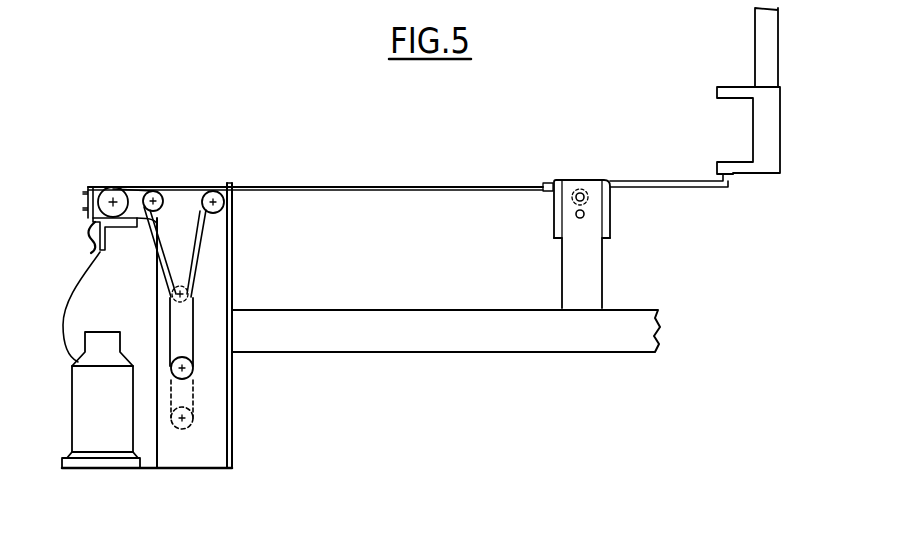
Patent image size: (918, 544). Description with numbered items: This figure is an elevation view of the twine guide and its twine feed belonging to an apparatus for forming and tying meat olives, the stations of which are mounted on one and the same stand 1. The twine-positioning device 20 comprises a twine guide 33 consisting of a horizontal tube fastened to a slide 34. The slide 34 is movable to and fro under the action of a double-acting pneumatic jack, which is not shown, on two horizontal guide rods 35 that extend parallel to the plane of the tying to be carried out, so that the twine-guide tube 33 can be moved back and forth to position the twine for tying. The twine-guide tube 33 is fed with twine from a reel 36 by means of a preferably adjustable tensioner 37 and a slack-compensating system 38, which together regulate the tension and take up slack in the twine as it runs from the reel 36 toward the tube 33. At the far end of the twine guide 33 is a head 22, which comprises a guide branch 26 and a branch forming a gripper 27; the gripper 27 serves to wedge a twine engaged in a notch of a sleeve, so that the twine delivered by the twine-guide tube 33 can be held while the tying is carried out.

The stand 1 is at (431, 358).
The twine-positioning device 20 is at (628, 168).
The head 22 is at (786, 128).
The guide branch 26 is at (730, 93).
The branch forming a gripper 27 is at (744, 183).
The twine guide 33 is at (676, 190).
The slide 34 is at (601, 181).
The horizontal guide rods 35 is at (578, 212).
The reel 36 is at (97, 407).
The tensioner 37 is at (87, 229).
The slack-compensating system 38 is at (182, 274).